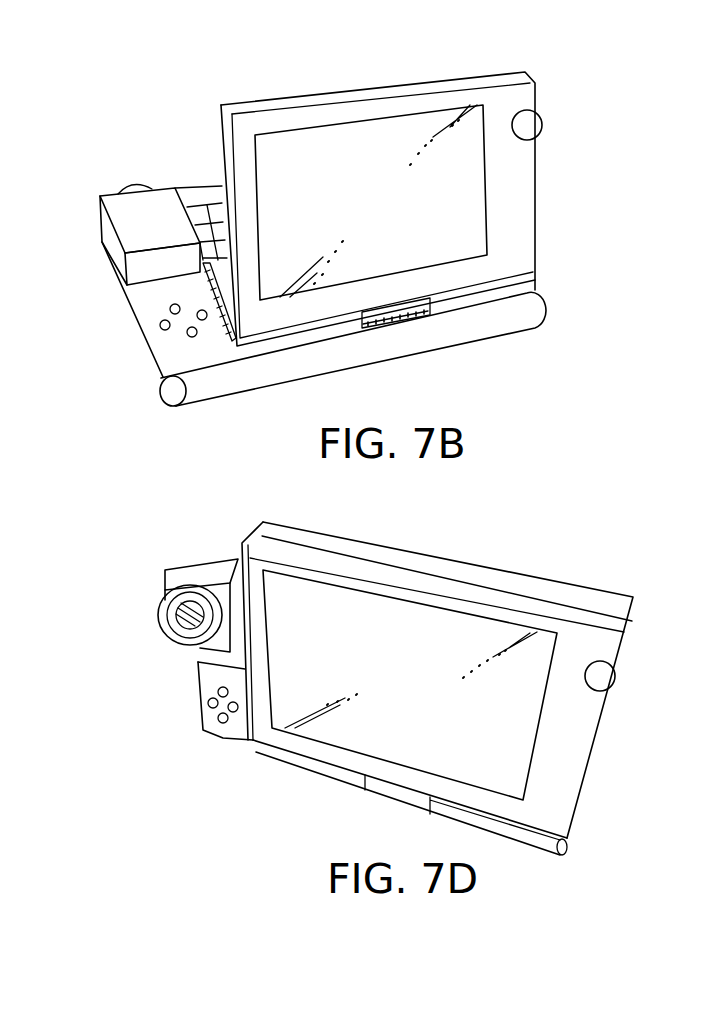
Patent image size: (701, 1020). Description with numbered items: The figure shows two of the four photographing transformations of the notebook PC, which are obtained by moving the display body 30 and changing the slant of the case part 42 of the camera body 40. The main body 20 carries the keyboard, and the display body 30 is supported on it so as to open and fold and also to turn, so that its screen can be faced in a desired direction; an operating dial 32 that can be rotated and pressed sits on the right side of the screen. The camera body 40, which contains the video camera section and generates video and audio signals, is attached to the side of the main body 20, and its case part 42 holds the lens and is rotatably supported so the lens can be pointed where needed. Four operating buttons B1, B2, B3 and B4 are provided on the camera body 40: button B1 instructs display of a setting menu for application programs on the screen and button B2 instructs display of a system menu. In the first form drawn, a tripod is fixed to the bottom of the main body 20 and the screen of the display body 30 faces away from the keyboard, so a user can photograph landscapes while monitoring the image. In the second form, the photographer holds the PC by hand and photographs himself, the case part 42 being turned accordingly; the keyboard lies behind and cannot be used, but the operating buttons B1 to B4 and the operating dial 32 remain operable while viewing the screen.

In FIG. 7B, the main body 20 is at (197, 195).
In FIG. 7D, the main body 20 is at (518, 578).
In FIG. 7B, the display body 30 is at (307, 90).
In FIG. 7D, the display body 30 is at (565, 613).
In FIG. 7B, the operating dial 32 is at (530, 117).
In FIG. 7D, the operating dial 32 is at (608, 677).
In FIG. 7B, the camera body 40 is at (98, 232).
In FIG. 7D, the camera body 40 is at (197, 672).
In FIG. 7D, the case part 42 is at (198, 562).
In FIG. 7B, the operating button B1 is at (168, 313).
In FIG. 7D, the operating button B1 is at (217, 692).
In FIG. 7B, the operating button B2 is at (188, 337).
In FIG. 7D, the operating button B2 is at (220, 722).
In FIG. 7B, the operating button B3 is at (160, 328).
In FIG. 7D, the operating button B3 is at (208, 707).
In FIG. 7B, the operating button B4 is at (202, 321).
In FIG. 7D, the operating button B4 is at (235, 712).